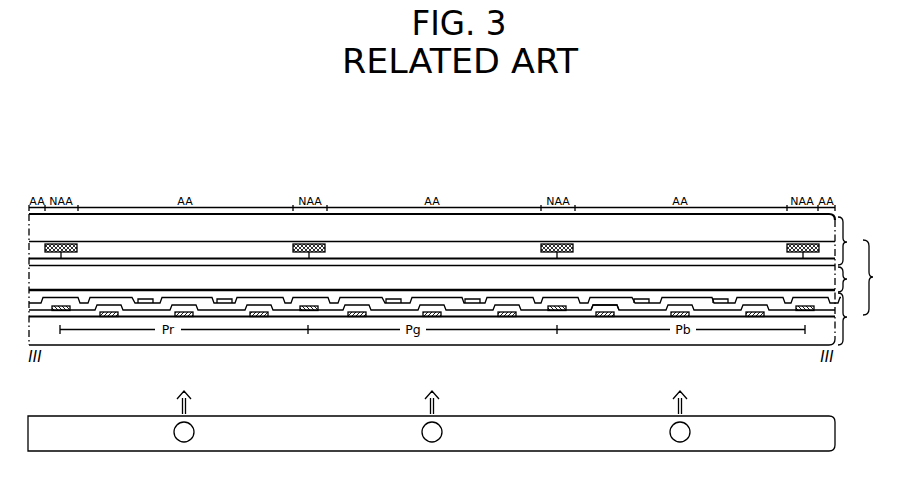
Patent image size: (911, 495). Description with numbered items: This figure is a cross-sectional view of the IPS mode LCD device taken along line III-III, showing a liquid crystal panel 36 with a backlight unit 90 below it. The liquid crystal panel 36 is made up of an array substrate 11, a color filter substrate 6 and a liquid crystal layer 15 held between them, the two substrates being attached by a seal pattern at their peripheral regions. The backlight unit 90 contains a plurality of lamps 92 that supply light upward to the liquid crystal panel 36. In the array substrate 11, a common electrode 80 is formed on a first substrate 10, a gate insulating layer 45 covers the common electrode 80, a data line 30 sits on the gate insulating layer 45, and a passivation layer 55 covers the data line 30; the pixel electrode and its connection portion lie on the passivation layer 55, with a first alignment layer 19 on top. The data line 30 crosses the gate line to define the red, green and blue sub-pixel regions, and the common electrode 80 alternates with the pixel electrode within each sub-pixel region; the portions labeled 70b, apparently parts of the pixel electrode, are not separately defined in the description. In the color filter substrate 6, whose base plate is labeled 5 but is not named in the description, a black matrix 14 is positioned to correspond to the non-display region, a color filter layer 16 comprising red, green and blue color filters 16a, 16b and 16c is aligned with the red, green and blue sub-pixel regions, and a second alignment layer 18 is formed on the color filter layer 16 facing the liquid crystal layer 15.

The upper substrate 5 is at (819, 235).
The color filter substrate 6 is at (848, 241).
The first substrate 10 is at (816, 340).
The array substrate 11 is at (852, 319).
The black matrix 14 is at (70, 243).
The liquid crystal layer 15 is at (447, 279).
The color filter layer 16 is at (425, 110).
The red color filter 16a is at (250, 253).
The green color filter 16b is at (472, 250).
The blue color filter 16c is at (642, 250).
The second alignment layer 18 is at (366, 261).
The first alignment layer 19 is at (483, 296).
The data line 30 is at (60, 305).
The liquid crystal panel 36 is at (878, 277).
The gate insulating layer 45 is at (612, 307).
The passivation layer 55 is at (509, 300).
The drain electrode contact 70b is at (224, 296).
The common electrode 80 is at (109, 316).
The backlight unit 90 is at (836, 431).
The lamps 92 is at (184, 437).